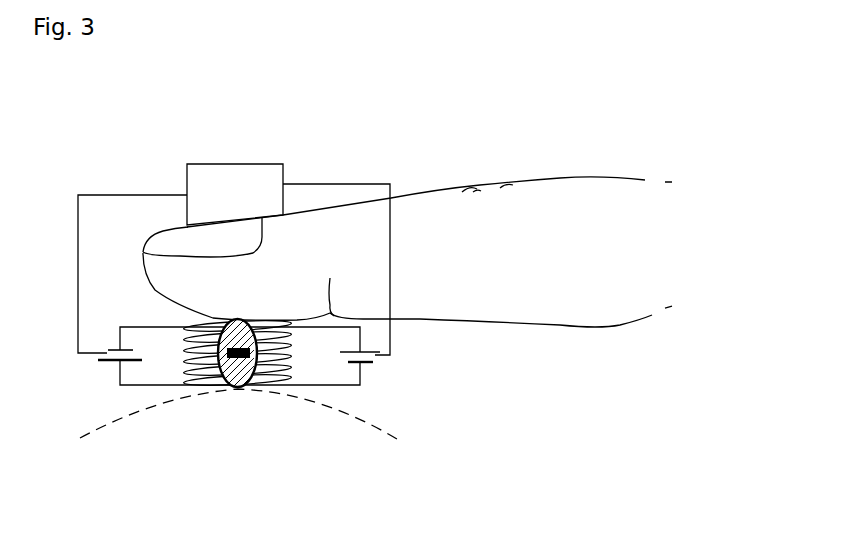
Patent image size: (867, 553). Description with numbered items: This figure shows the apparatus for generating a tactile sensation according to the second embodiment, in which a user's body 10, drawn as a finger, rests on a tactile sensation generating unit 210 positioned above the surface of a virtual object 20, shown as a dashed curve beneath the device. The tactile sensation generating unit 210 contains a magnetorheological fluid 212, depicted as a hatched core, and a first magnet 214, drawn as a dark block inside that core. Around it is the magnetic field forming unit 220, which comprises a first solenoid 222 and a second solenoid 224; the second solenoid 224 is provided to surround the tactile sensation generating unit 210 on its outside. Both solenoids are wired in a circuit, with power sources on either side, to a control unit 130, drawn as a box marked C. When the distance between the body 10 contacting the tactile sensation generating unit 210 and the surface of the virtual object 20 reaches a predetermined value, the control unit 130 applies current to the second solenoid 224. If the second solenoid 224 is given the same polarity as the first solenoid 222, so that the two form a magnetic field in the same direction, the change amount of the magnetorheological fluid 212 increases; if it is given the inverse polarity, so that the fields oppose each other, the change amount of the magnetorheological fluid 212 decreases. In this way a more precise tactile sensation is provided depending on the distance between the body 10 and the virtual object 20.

The body 10 is at (435, 200).
The virtual object 20 is at (368, 423).
The control unit 130 is at (257, 172).
The tactile sensation generating unit 210 is at (273, 411).
The magnetorheological fluid 212 is at (245, 380).
The first magnet 214 is at (260, 368).
The magnetic field forming unit 220 is at (187, 433).
The first solenoid 222 is at (200, 374).
The second solenoid 224 is at (188, 362).